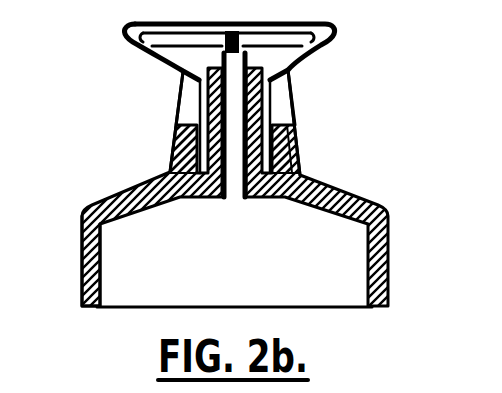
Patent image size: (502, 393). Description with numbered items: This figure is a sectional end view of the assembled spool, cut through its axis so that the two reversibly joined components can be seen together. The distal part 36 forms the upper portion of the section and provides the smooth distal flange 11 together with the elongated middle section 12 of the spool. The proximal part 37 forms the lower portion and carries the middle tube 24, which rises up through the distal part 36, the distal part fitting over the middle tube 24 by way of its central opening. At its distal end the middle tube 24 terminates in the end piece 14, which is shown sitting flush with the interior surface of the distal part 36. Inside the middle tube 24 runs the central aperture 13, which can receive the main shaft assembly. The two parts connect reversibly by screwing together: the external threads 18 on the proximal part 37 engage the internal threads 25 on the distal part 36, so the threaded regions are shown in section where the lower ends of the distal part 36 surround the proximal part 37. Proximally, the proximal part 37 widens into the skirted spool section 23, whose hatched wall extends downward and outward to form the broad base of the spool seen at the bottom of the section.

The distal flange 11 is at (329, 37).
The middle section 12 is at (297, 100).
The central aperture 13 is at (284, 125).
The end piece 14 is at (266, 95).
The external threads 18 is at (298, 140).
The skirted spool section 23 is at (82, 262).
The middle tube 24 is at (198, 108).
The internal threads 25 is at (174, 142).
The distal part 36 is at (180, 113).
The proximal part 37 is at (170, 172).